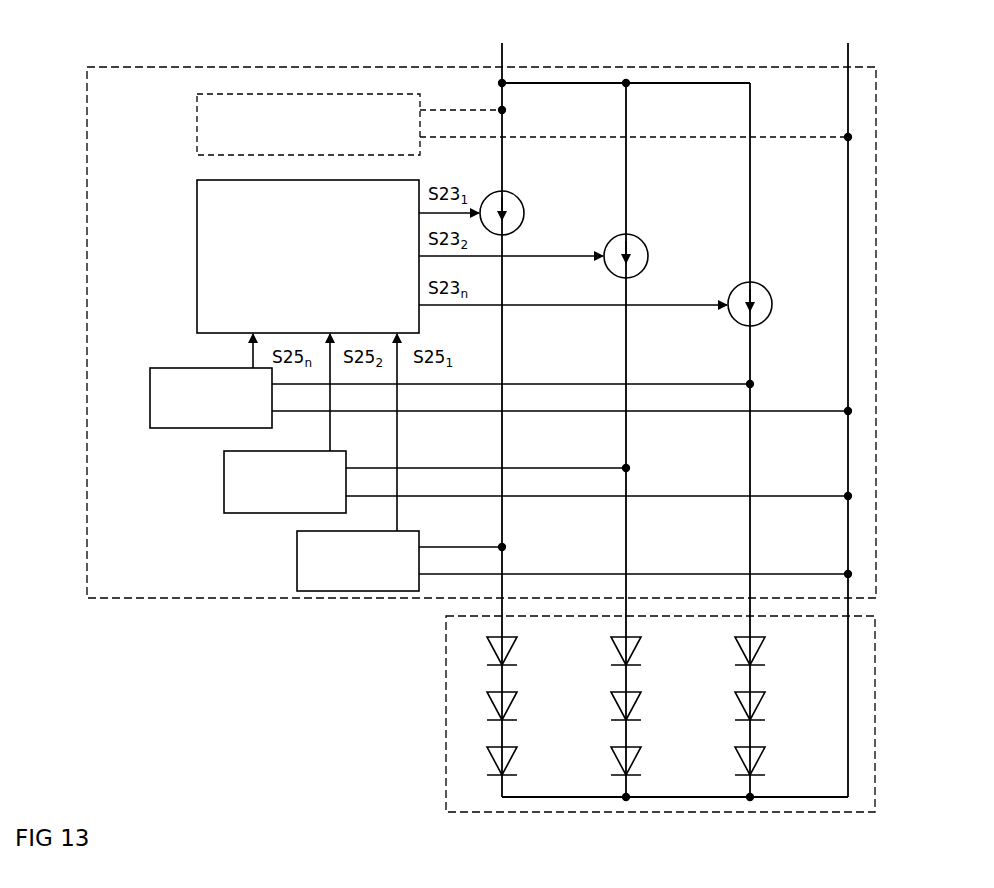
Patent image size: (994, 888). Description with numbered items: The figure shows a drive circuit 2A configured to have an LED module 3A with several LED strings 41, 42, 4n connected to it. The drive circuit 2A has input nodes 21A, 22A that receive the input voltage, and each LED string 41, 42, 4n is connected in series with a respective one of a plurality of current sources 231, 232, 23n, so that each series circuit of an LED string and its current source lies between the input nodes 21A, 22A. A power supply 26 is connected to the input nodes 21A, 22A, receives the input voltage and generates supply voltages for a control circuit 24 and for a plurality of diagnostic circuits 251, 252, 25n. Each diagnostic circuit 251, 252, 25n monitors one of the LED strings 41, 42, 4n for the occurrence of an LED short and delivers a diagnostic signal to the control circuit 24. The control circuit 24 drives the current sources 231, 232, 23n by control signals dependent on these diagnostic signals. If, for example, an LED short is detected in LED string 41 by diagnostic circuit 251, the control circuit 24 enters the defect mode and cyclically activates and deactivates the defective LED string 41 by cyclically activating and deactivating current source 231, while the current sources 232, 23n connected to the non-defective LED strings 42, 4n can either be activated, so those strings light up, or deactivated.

The drive circuit 2A is at (877, 265).
The LED module 3A is at (876, 700).
The input node 21A is at (505, 408).
The input node 22A is at (845, 408).
The power supply 26 is at (197, 124).
The control circuit 24 is at (197, 232).
The current source 231 is at (524, 208).
The current source 232 is at (648, 251).
The current source 23n is at (772, 299).
The diagnostic circuit 25n is at (150, 396).
The diagnostic circuit 252 is at (224, 480).
The diagnostic circuit 251 is at (297, 560).
The LED string 41 is at (522, 708).
The LED string 42 is at (646, 708).
The LED string 4n is at (770, 708).